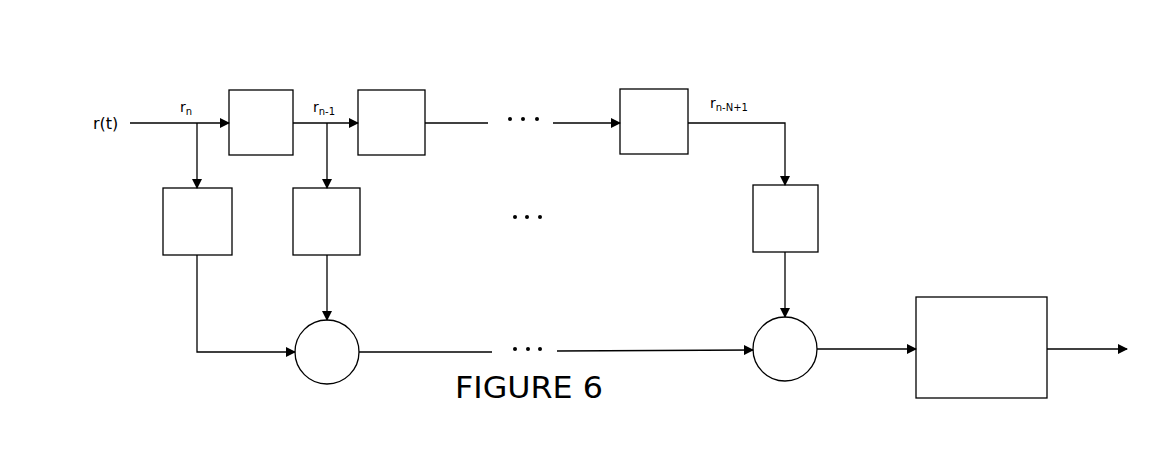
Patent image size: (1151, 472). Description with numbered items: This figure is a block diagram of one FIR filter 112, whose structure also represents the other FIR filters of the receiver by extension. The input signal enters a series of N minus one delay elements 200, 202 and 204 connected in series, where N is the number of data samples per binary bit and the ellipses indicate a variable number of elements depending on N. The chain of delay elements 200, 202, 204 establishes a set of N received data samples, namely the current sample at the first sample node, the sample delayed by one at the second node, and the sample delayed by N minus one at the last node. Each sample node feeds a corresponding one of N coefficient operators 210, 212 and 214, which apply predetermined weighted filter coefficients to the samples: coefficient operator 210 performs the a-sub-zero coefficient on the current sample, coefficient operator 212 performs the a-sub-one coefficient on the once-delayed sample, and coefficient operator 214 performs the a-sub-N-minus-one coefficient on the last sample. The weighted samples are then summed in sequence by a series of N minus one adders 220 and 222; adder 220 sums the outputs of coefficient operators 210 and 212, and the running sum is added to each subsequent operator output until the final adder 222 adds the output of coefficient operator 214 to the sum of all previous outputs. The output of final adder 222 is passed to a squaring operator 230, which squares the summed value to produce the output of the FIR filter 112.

The FIR filter 112 is at (1002, 115).
The delay element 200 is at (262, 90).
The delay element 202 is at (393, 90).
The delay element 204 is at (655, 89).
The coefficient operator 210 is at (163, 222).
The coefficient operator 212 is at (360, 218).
The coefficient operator 214 is at (818, 207).
The adder 220 is at (350, 325).
The adder 222 is at (805, 308).
The squaring operator 230 is at (1005, 297).